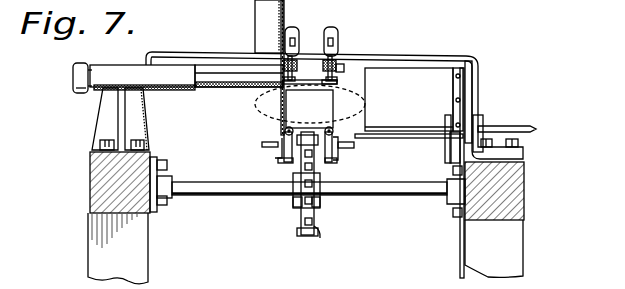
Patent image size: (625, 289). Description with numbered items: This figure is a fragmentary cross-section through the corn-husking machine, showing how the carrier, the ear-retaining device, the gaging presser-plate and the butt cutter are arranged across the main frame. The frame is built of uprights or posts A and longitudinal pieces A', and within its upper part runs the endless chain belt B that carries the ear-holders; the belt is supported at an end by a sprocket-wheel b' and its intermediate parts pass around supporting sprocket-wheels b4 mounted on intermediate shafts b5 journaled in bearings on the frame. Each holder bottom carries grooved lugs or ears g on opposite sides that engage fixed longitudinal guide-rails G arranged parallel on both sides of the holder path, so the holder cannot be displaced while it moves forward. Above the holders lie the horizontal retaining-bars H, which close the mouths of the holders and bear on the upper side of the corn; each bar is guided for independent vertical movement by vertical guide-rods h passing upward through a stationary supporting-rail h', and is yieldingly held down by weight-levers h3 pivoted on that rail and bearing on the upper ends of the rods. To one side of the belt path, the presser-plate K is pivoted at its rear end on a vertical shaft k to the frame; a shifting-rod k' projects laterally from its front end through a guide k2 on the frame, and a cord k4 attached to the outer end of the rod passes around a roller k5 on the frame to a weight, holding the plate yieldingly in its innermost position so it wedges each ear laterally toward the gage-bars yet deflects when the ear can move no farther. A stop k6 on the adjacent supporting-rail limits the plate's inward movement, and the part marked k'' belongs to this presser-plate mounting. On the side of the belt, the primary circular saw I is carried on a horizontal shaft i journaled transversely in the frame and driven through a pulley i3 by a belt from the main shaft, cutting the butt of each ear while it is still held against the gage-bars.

The pulley i3 is at (76, 76).
The horizontal shaft i is at (186, 87).
The pipe loop k'' is at (334, 96).
The circular saw I is at (281, 34).
The weight-levers h3 is at (297, 46).
The supporting-rail h' is at (324, 56).
The stop k6 is at (344, 70).
The retaining-bars H is at (310, 75).
The guide-rods h is at (340, 80).
The endless chain belt B is at (310, 110).
The presser-plate K is at (397, 98).
The shifting-rod k' is at (409, 121).
The guide k2 is at (481, 126).
The roller k5 is at (493, 141).
The vertical shaft k is at (446, 166).
The cord k4 is at (460, 258).
The uprights or posts A is at (494, 219).
The longitudinal pieces A' is at (110, 186).
The intermediate shafts b5 is at (172, 204).
The guide-rails G is at (262, 145).
The grooved lugs or ears g is at (337, 151).
The sprocket-wheel b' is at (299, 199).
The supporting sprocket-wheels b4 is at (313, 231).